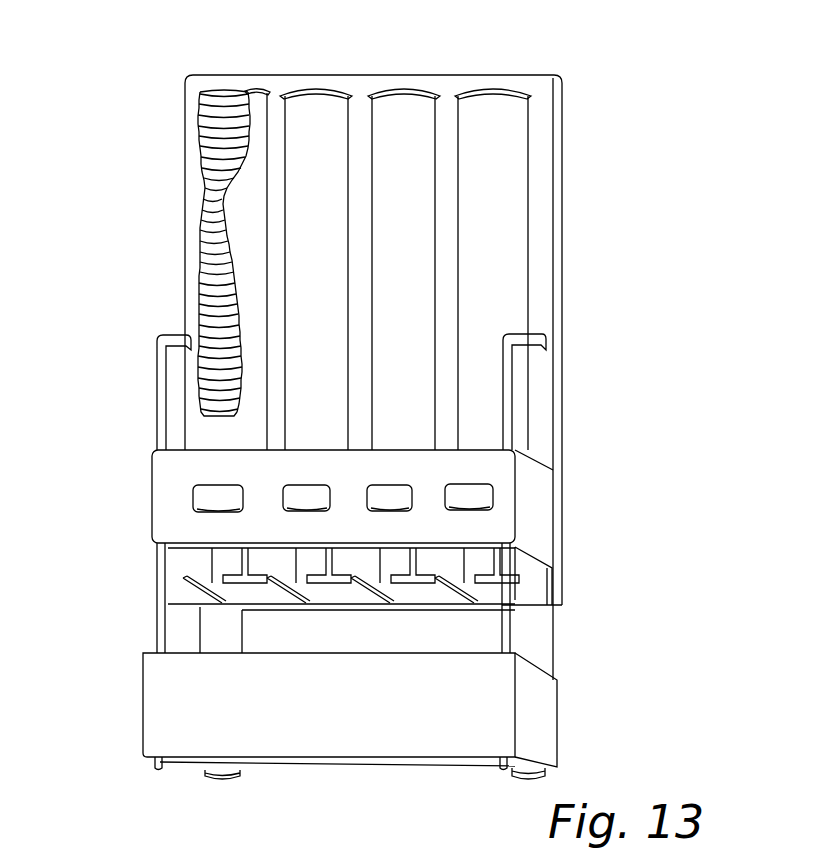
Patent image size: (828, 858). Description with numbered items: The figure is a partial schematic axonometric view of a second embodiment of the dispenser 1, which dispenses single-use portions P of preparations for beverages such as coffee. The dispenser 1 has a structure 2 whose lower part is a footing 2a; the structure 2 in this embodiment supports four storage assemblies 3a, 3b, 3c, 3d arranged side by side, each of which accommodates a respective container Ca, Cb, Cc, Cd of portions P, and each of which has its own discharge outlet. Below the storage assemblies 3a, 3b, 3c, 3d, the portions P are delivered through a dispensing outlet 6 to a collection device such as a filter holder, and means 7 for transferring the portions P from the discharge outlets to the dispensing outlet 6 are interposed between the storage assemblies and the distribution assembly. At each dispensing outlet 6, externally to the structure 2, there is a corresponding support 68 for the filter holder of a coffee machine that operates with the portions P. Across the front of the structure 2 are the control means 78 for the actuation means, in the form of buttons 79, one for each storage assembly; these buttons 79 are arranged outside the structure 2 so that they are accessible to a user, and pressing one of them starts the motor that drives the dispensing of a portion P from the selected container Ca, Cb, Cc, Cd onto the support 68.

The dispenser 1 is at (644, 206).
The structure 2 is at (567, 452).
The footing 2a is at (543, 725).
The storage assembly 3a is at (193, 445).
The storage assembly 3b is at (310, 447).
The storage assembly 3c is at (405, 447).
The storage assembly 3d is at (474, 447).
The dispensing outlet 6 is at (208, 552).
The transfer means 7 is at (192, 517).
The support 68 is at (193, 598).
The control means 78 is at (180, 468).
The button 79 is at (197, 498).
The container Ca is at (259, 96).
The container Cb is at (333, 158).
The container Cc is at (422, 153).
The container Cd is at (517, 152).
The portion P is at (203, 107).